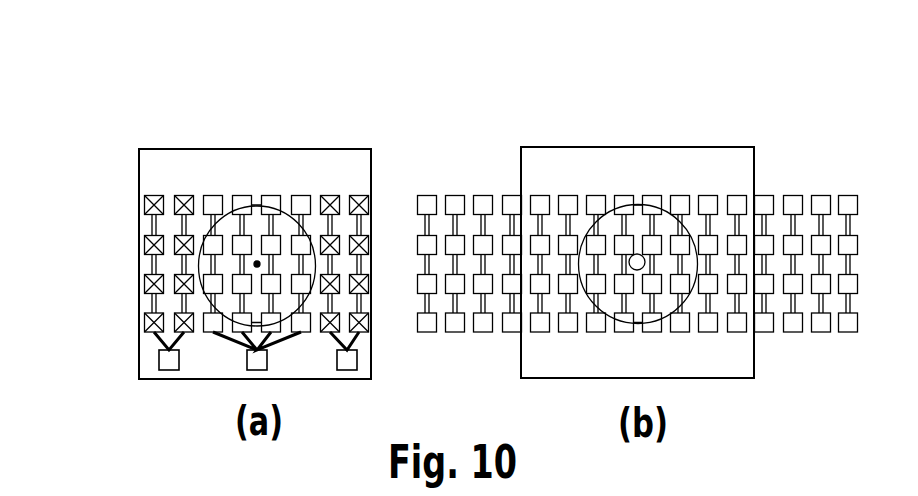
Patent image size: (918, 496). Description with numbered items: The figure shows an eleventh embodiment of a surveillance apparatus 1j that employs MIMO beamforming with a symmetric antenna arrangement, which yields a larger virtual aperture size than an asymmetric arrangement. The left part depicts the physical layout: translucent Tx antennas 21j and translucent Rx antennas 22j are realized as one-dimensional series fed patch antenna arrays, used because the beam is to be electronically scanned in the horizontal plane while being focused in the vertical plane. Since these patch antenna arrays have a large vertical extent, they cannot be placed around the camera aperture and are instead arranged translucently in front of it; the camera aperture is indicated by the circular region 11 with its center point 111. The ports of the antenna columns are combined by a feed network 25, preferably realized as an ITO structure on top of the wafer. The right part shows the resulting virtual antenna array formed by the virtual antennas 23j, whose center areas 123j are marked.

The surveillance apparatus 1j is at (112, 160).
The translucent Tx antennas 21j is at (215, 196).
The translucent Rx antennas 22j is at (333, 196).
The membrane / diaphragm region 11 is at (258, 206).
The membrane center point 111 is at (254, 264).
The feed network 25 is at (159, 358).
The virtual antennas 23j is at (570, 194).
The center areas 123j is at (645, 256).